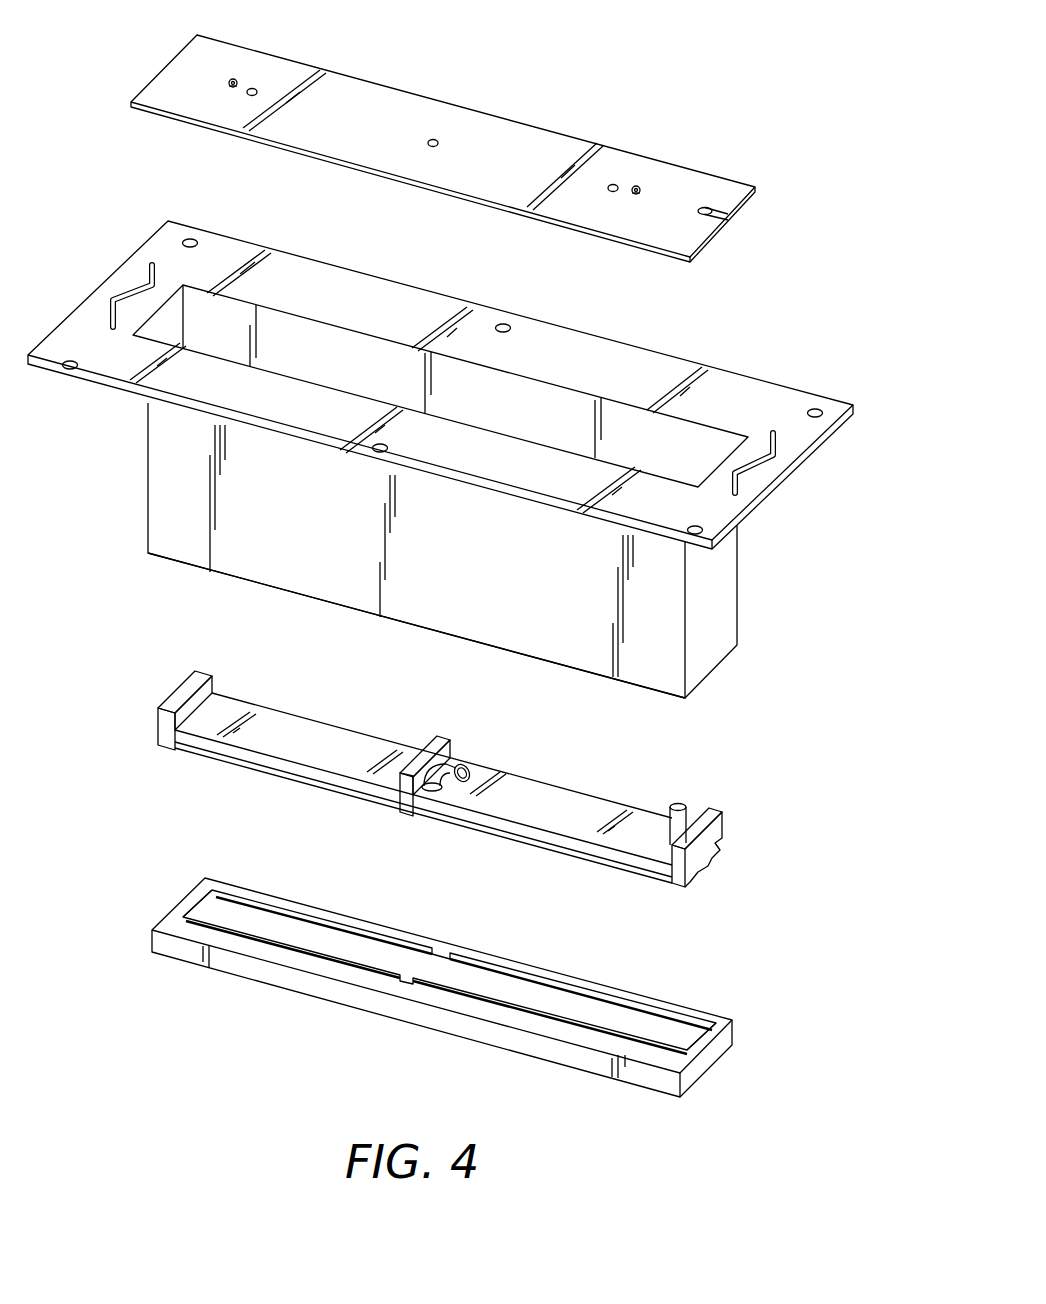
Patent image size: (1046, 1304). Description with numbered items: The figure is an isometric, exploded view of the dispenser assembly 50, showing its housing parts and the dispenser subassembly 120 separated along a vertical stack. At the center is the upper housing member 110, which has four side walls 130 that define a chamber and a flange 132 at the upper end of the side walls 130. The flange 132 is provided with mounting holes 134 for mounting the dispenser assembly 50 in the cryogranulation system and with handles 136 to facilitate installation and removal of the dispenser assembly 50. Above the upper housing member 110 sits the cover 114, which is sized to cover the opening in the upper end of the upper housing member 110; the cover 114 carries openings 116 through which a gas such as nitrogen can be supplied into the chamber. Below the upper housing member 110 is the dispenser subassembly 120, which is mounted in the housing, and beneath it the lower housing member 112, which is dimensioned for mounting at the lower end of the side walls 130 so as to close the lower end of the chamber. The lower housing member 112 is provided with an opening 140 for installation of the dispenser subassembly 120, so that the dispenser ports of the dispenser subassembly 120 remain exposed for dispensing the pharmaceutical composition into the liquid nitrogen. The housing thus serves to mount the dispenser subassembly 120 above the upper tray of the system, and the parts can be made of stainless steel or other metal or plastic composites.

The dispenser assembly 50 is at (667, 65).
The upper housing member 110 is at (143, 460).
The lower housing member 112 is at (183, 895).
The cover 114 is at (452, 100).
The openings 116 is at (257, 88).
The dispenser subassembly 120 is at (285, 713).
The side walls 130 is at (633, 685).
The flange 132 is at (380, 282).
The mounting holes 134 is at (193, 237).
The handles 136 is at (135, 278).
The opening 140 is at (307, 942).